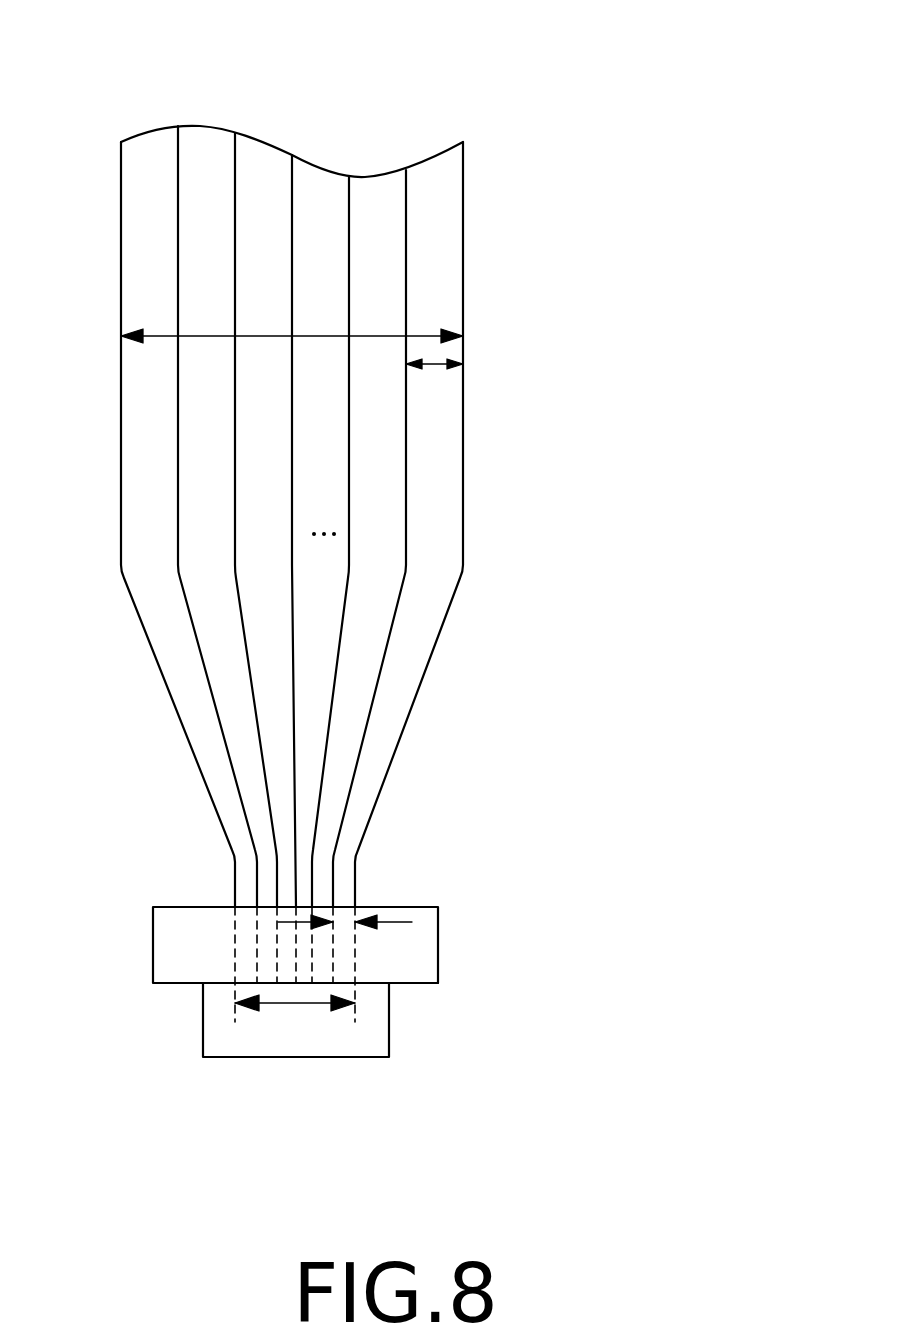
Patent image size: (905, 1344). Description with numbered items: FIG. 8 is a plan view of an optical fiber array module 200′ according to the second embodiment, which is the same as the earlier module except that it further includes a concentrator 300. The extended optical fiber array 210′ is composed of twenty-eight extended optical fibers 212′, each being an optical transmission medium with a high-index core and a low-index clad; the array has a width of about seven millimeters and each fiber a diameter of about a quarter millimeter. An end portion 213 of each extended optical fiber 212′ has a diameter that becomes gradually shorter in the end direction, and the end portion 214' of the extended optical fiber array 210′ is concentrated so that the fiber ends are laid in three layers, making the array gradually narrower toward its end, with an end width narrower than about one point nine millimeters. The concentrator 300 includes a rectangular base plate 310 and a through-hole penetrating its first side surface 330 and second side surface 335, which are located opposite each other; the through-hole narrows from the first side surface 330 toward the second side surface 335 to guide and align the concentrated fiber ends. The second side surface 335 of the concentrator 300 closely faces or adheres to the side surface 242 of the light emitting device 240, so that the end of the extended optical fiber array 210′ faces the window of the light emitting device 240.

The optical fiber array module 200′ is at (305, 36).
The extended optical fiber array 210′ is at (530, 157).
The extended optical fiber 212′ is at (448, 230).
The end portion of extended optical fiber 213 is at (432, 637).
The end portion of extended optical fiber array 214' is at (358, 707).
The concentrator 300 is at (465, 913).
The base plate 310 is at (438, 965).
The first side surface 330 is at (403, 907).
The second side surface 335 is at (415, 983).
The light emitting device 240 is at (203, 1017).
The side surface of light emitting device 242 is at (342, 983).